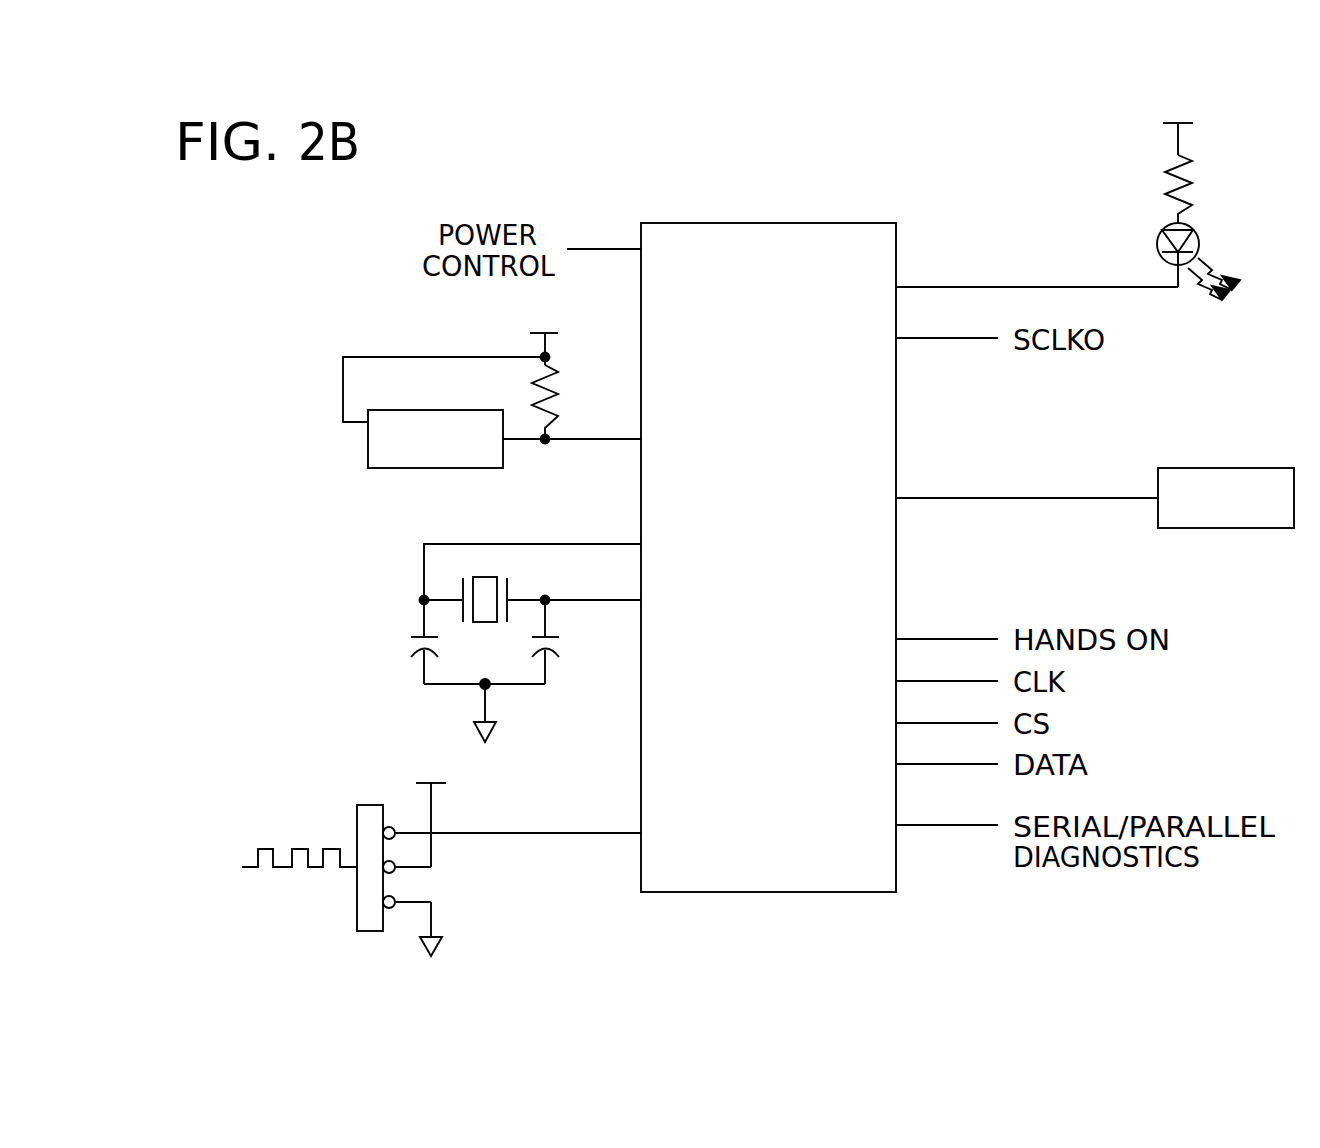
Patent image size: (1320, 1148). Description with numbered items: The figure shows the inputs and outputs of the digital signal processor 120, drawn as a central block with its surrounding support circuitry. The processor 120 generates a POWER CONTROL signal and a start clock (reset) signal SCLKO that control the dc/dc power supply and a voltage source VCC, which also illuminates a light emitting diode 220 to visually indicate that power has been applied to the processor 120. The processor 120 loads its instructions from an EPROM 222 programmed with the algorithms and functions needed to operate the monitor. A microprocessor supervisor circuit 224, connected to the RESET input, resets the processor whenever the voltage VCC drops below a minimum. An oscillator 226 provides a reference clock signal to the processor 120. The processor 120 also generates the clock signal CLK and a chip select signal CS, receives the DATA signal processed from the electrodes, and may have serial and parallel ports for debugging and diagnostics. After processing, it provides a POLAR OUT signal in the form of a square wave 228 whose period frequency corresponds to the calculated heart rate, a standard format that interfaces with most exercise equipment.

The digital signal processor 120 is at (778, 223).
The LED indicator 220 is at (1198, 234).
The EPROM 222 is at (1157, 518).
The microprocessor supervisor circuit 224 is at (366, 462).
The oscillator 226 is at (395, 587).
The square wave 228 is at (283, 788).